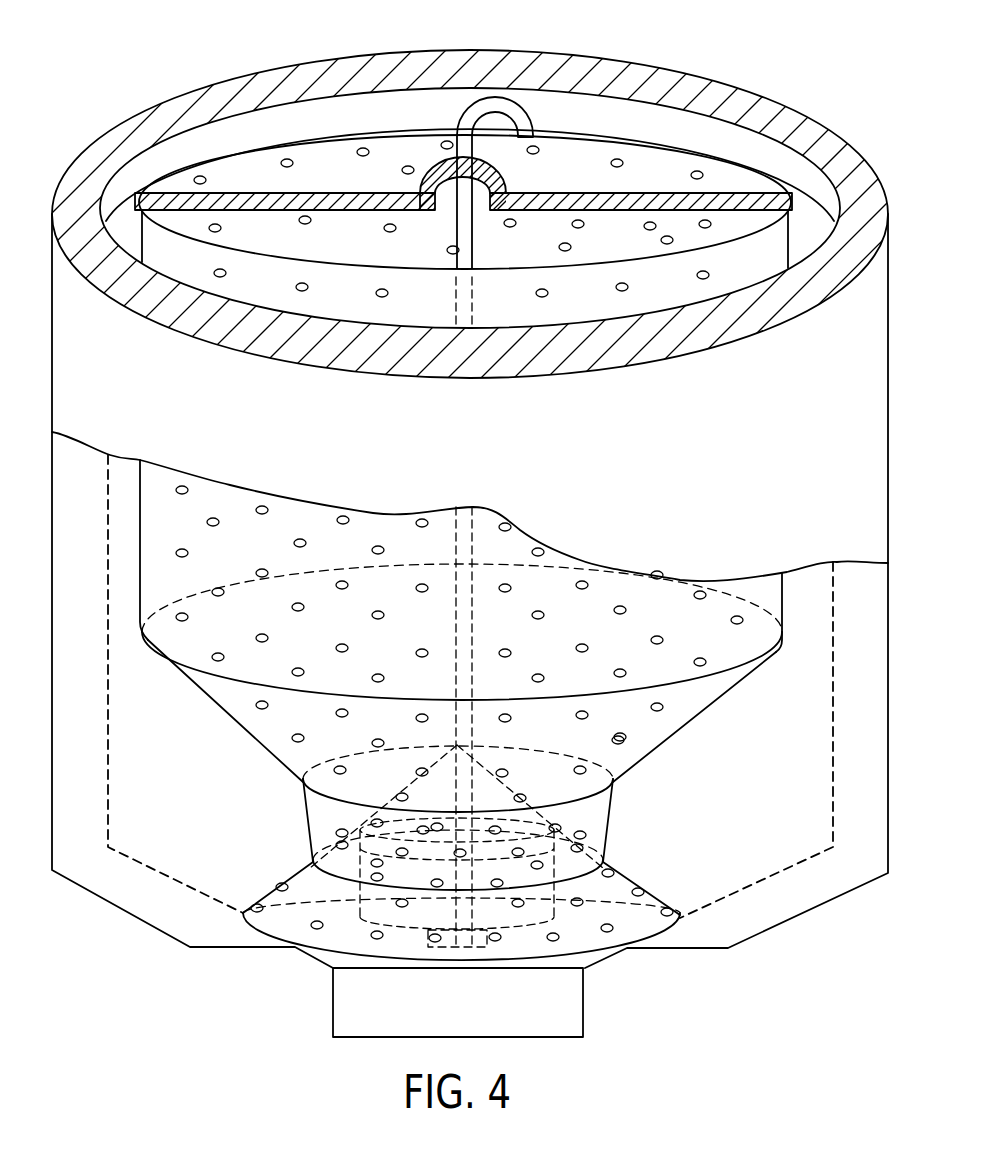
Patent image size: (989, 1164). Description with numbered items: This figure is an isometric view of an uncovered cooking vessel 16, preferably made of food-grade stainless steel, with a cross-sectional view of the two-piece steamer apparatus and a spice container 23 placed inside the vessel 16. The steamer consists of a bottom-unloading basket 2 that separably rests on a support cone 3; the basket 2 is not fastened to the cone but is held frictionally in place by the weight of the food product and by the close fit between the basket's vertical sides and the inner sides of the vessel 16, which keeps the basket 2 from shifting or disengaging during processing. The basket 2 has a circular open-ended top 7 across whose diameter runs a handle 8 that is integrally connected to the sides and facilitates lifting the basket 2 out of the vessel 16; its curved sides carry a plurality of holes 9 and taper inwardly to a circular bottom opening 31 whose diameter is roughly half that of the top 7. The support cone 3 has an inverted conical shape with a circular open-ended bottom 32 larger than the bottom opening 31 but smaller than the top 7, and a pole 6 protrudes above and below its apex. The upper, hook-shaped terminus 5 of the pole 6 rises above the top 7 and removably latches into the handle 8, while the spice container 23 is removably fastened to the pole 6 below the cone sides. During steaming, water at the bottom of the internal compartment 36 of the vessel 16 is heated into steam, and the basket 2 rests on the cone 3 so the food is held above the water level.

The bottom-unloading basket 2 is at (135, 498).
The support cone 3 is at (257, 884).
The hook-shaped terminus 5 is at (516, 101).
The pole 6 is at (446, 535).
The open-ended top 7 is at (597, 152).
The handle 8 is at (245, 187).
The holes 9 is at (286, 544).
The cooking vessel 16 is at (658, 448).
The spice container 23 is at (351, 889).
The bottom opening 31 is at (593, 887).
The open-ended bottom 32 is at (542, 971).
The internal compartment 36 is at (130, 722).